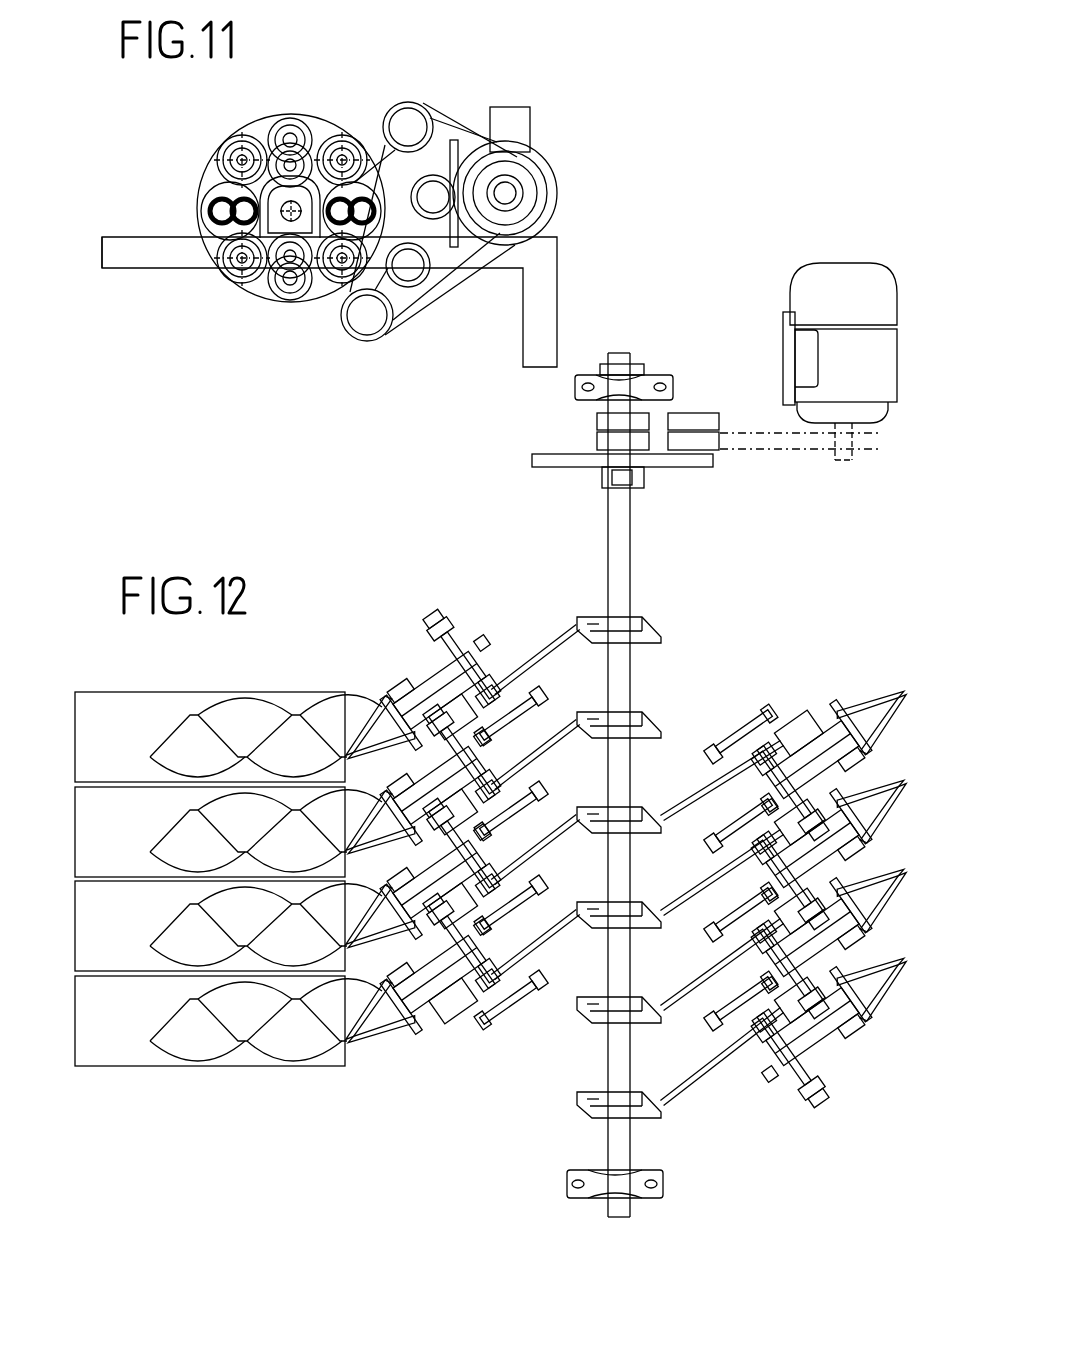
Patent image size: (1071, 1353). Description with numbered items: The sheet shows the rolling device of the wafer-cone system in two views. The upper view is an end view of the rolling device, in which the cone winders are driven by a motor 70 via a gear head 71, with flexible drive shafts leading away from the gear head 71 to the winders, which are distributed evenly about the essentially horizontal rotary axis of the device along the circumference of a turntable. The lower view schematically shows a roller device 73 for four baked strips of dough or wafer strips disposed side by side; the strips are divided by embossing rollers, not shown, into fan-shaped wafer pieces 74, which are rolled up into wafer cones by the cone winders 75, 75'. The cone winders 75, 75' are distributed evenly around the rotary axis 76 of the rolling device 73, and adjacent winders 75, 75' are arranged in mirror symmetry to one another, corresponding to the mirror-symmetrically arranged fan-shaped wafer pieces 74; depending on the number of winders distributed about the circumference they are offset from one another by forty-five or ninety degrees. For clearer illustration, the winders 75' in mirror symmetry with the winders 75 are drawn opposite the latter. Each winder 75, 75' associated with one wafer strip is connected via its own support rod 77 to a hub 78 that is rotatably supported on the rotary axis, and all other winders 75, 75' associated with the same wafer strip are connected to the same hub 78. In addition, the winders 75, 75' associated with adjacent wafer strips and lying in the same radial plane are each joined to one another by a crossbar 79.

In FIG. 11, the motor 70 is at (543, 166).
In FIG. 11, the gear head 71 is at (186, 162).
In FIG. 12, the roller device 73 is at (458, 1096).
In FIG. 12, the fan-shaped wafer pieces 74 is at (188, 1072).
In FIG. 12, the cone winders 75 is at (439, 845).
In FIG. 12, the cone winders 75' is at (812, 867).
In FIG. 12, the rotary axis 76 is at (622, 1146).
In FIG. 12, the support rod 77 is at (545, 975).
In FIG. 12, the hub 78 is at (586, 1093).
In FIG. 12, the crossbar 79 is at (770, 868).